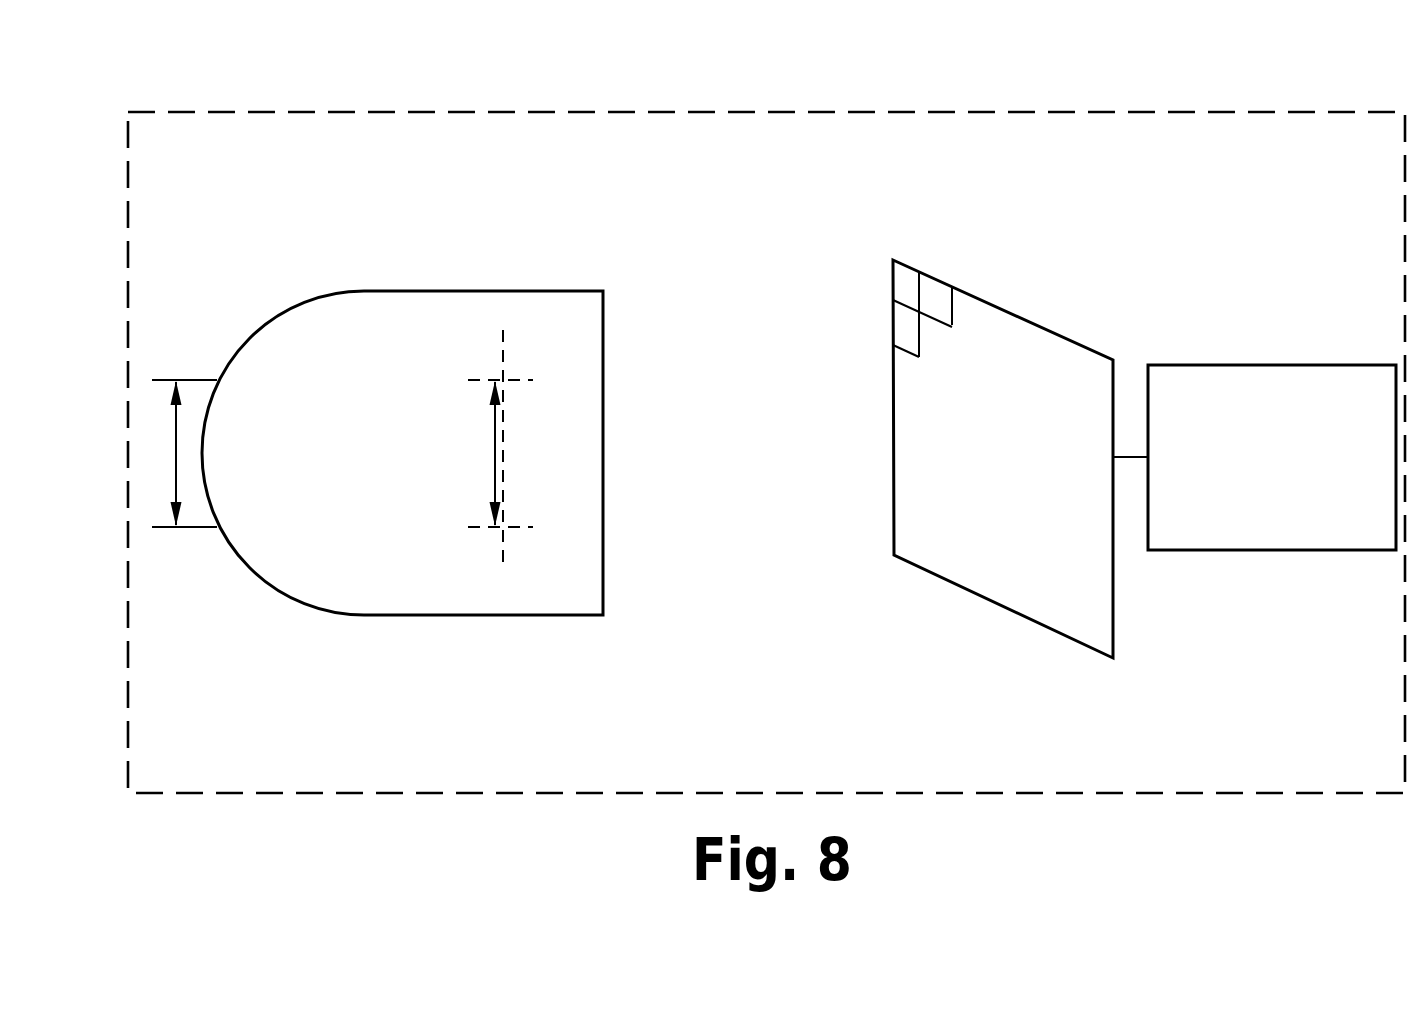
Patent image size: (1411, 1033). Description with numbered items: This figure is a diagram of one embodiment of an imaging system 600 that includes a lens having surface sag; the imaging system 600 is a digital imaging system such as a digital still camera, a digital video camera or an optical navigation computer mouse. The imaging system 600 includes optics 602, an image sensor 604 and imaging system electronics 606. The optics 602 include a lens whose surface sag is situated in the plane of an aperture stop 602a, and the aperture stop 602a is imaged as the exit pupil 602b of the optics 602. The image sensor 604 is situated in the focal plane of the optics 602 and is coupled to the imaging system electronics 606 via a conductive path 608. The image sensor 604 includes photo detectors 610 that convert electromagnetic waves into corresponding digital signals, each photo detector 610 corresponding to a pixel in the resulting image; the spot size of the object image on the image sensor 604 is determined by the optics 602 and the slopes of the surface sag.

The imaging system 600 is at (627, 98).
The optics 602 is at (407, 292).
The aperture stop 602a is at (163, 453).
The exit pupil 602b is at (480, 450).
The image sensor 604 is at (998, 305).
The imaging system electronics 606 is at (1288, 365).
The conductive path 608 is at (1127, 457).
The photo detectors 610 is at (897, 283).